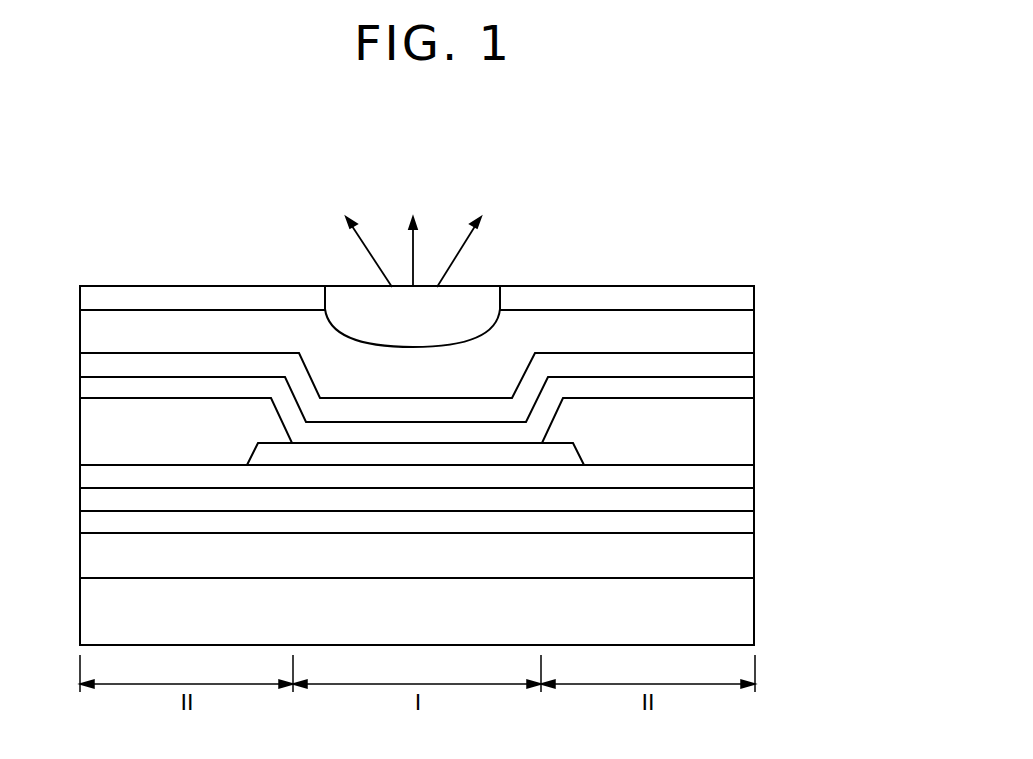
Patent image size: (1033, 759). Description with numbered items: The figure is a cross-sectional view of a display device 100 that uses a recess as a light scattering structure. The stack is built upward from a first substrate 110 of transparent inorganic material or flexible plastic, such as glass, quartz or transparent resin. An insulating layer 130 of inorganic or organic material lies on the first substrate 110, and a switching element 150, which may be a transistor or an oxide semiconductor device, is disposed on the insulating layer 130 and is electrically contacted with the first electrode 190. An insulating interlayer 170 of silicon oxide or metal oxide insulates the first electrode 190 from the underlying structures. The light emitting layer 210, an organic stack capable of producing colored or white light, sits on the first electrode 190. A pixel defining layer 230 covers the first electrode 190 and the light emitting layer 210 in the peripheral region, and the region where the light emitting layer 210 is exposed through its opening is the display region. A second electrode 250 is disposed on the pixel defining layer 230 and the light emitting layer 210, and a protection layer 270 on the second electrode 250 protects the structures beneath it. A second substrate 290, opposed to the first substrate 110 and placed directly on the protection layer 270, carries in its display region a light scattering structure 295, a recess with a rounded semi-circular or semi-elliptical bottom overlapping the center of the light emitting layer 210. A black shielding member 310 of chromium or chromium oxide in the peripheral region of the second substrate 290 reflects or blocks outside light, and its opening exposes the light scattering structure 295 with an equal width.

The display device 100 is at (436, 153).
The first substrate 110 is at (741, 613).
The insulating layer 130 is at (741, 556).
The switching element 150 is at (741, 522).
The insulating interlayer 170 is at (741, 499).
The first electrode 190 is at (741, 476).
The light emitting layer 210 is at (567, 452).
The pixel defining layer 230 is at (741, 420).
The second electrode 250 is at (741, 386).
The protection layer 270 is at (741, 362).
The second substrate 290 is at (741, 330).
The light scattering structure 295 is at (388, 316).
The shielding member 310 is at (741, 298).